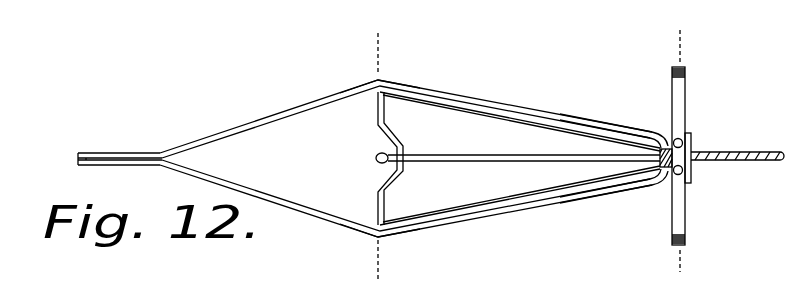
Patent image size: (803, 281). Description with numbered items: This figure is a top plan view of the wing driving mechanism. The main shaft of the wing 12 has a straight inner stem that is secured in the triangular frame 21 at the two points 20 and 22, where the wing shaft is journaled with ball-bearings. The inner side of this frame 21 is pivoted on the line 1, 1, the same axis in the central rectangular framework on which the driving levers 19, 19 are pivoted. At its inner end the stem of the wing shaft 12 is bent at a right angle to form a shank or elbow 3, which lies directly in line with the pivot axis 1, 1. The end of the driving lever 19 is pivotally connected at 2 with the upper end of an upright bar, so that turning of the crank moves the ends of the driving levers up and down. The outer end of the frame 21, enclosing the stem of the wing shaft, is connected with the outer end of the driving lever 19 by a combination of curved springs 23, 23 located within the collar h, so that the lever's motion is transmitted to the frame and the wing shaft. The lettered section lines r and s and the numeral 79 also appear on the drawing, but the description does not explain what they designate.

The pivot points 1 is at (382, 80).
The pivotal connection 2 is at (76, 160).
The shank or elbow 3 is at (377, 155).
The main shaft of the wing 12 is at (733, 164).
The driving lever 19 is at (262, 144).
The ball-bearing journal point 20 is at (692, 150).
The triangular frame 21 is at (545, 132).
The ball-bearing journal point 22 is at (404, 158).
The curved springs 23 is at (687, 93).
The arm end portions 79 is at (637, 128).
The collar h is at (692, 172).
The section line r- r is at (361, 157).
The section line s- s is at (686, 145).